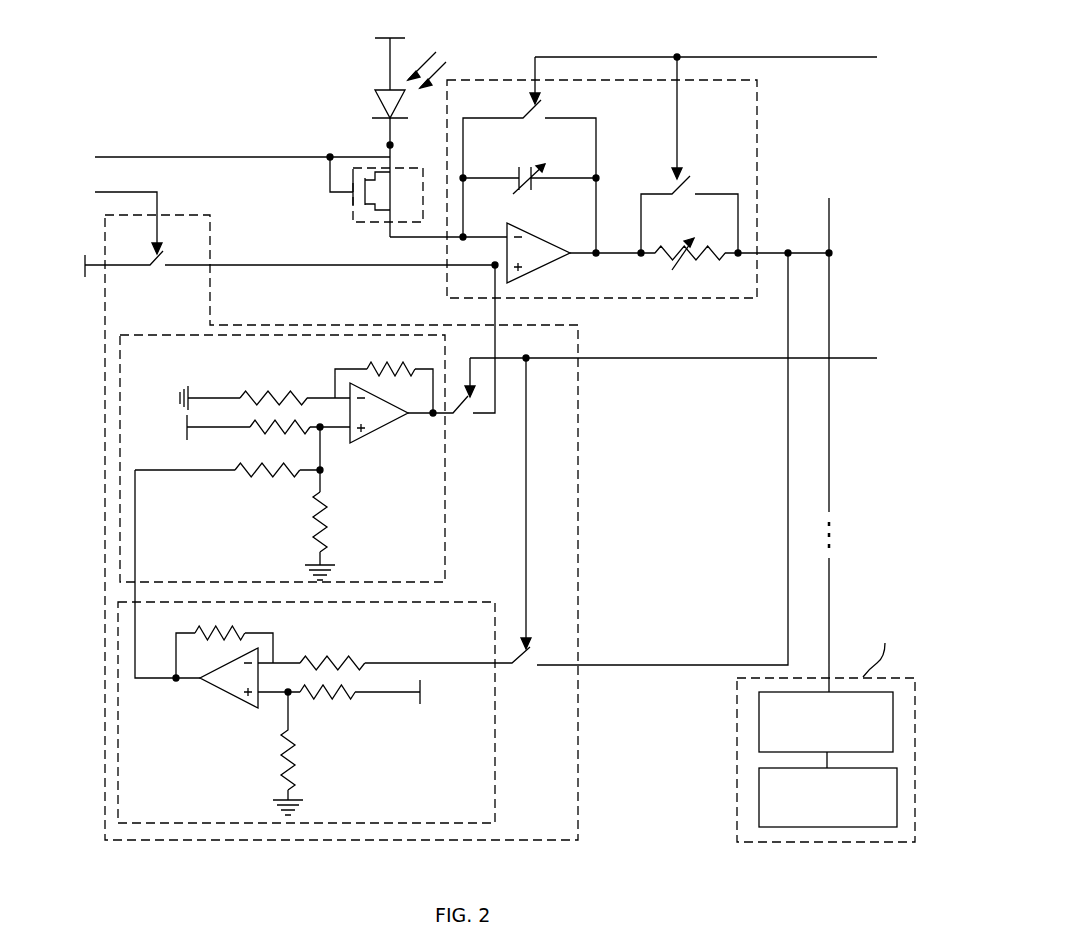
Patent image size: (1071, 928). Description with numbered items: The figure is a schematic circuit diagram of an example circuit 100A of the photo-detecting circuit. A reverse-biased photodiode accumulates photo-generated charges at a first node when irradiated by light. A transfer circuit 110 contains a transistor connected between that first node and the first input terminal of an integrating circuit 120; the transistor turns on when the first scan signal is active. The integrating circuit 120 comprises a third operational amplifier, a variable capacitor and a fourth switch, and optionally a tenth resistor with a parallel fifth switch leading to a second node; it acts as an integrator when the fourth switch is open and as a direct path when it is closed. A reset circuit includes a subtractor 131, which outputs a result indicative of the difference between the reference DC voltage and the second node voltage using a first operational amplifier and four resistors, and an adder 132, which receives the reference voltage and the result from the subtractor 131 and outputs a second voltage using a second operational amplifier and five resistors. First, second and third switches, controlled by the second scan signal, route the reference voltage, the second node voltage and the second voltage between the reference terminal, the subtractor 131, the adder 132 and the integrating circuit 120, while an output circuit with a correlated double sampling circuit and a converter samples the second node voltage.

The example circuit 100A is at (152, 31).
The transfer circuit 110 is at (352, 211).
The integrating circuit 120 is at (757, 148).
The subtractor 131 is at (495, 727).
The adder 132 is at (445, 470).